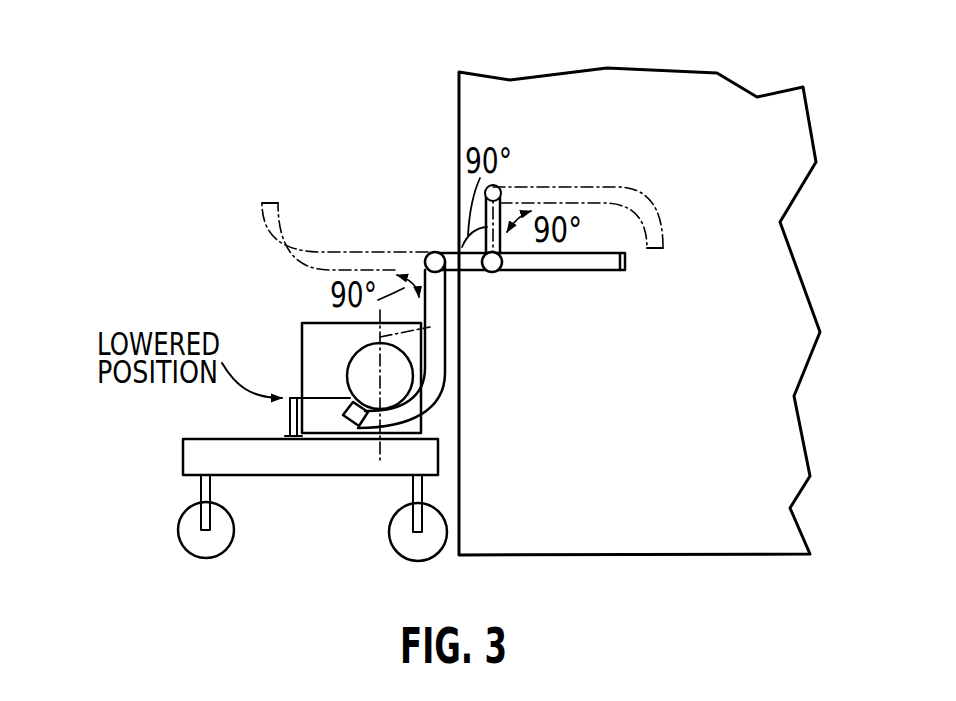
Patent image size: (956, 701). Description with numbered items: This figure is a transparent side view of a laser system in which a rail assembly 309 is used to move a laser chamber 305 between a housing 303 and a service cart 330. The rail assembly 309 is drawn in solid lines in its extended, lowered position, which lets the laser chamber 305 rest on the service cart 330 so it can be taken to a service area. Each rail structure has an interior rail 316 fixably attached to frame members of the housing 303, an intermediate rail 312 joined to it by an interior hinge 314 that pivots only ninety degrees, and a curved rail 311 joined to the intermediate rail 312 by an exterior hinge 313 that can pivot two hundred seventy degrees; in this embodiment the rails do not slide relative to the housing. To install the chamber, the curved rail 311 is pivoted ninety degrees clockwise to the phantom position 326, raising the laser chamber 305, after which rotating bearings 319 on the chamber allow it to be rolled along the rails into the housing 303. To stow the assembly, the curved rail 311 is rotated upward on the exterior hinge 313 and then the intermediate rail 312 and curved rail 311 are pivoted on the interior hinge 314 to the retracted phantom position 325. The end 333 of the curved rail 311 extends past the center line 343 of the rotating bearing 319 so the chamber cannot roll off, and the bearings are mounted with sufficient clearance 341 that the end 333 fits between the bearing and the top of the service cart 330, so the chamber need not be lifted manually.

The housing 303 is at (746, 66).
The laser chamber 305 is at (303, 323).
The rail assembly 309 is at (373, 204).
The curved rail 311 is at (432, 382).
The intermediate rail 312 is at (473, 271).
The exterior hinge 313 is at (432, 252).
The interior hinge 314 is at (497, 272).
The interior rail 316 is at (625, 272).
The rotating bearing 319 is at (357, 367).
The retracted position 325 is at (640, 200).
The raised position of curved rail 326 is at (256, 225).
The service cart 330 is at (160, 459).
The end of curved rail 333 is at (360, 432).
The clearance 341 is at (289, 418).
The center line of rotating bearing 343 is at (455, 328).